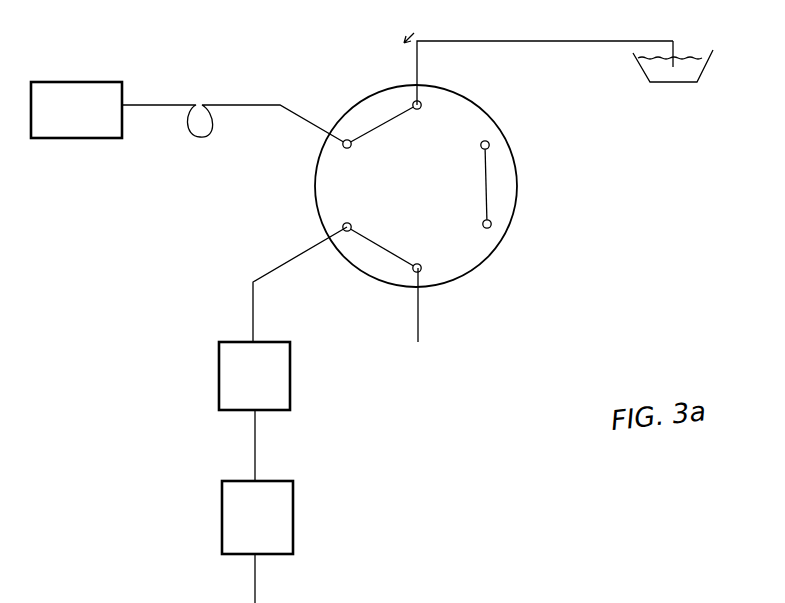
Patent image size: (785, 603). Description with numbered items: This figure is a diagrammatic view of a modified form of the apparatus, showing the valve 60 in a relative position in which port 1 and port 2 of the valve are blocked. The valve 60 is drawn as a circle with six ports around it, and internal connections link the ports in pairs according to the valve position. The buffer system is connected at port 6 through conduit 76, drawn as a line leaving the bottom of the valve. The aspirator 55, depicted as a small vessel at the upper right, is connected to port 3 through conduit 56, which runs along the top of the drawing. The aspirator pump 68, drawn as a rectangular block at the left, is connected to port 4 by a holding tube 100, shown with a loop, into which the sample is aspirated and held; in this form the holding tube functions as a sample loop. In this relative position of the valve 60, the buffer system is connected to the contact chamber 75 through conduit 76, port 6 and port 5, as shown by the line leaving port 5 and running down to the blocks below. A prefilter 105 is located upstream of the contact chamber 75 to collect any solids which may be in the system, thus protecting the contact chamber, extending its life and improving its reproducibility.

The aspirator pump 68 is at (97, 88).
The holding tube 100 is at (204, 102).
The valve 60 is at (429, 186).
The port 1 is at (478, 225).
The port 2 is at (474, 146).
The port 3 is at (414, 117).
The port 4 is at (343, 156).
The port 5 is at (354, 218).
The port 6 is at (416, 257).
The conduit 56 is at (493, 41).
The aspirator 55 is at (675, 37).
The conduit 76 is at (420, 312).
The prefilter 105 is at (290, 378).
The contact chamber 75 is at (293, 518).